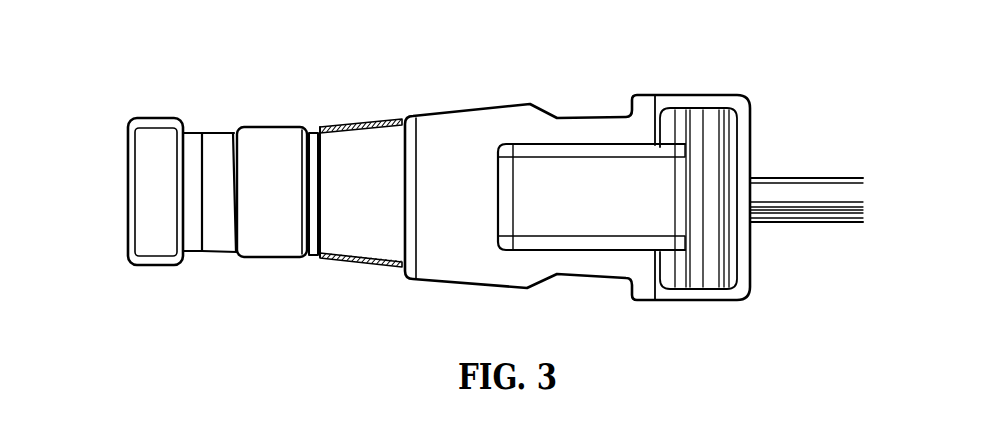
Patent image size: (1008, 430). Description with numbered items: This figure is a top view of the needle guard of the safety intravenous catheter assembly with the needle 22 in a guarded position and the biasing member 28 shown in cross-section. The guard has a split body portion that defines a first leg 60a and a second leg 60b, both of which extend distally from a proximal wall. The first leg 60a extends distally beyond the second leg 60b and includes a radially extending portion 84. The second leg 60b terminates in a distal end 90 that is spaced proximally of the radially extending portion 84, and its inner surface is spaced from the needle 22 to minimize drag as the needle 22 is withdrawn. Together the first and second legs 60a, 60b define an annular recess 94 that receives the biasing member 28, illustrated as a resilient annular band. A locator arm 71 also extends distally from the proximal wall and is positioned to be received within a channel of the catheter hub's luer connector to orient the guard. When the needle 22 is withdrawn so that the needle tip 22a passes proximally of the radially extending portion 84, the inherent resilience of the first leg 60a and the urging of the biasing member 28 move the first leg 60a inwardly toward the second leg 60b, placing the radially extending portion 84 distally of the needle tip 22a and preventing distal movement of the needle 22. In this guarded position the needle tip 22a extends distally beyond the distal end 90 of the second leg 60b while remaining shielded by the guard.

The needle 22 is at (840, 223).
The needle tip 22a is at (212, 192).
The biasing member 28 is at (389, 133).
The first leg 60a is at (222, 137).
The second leg 60b is at (432, 262).
The locator arm 71 is at (580, 148).
The radially extending portion 84 is at (158, 193).
The distal end 90 is at (273, 240).
The annular recess 94 is at (393, 123).